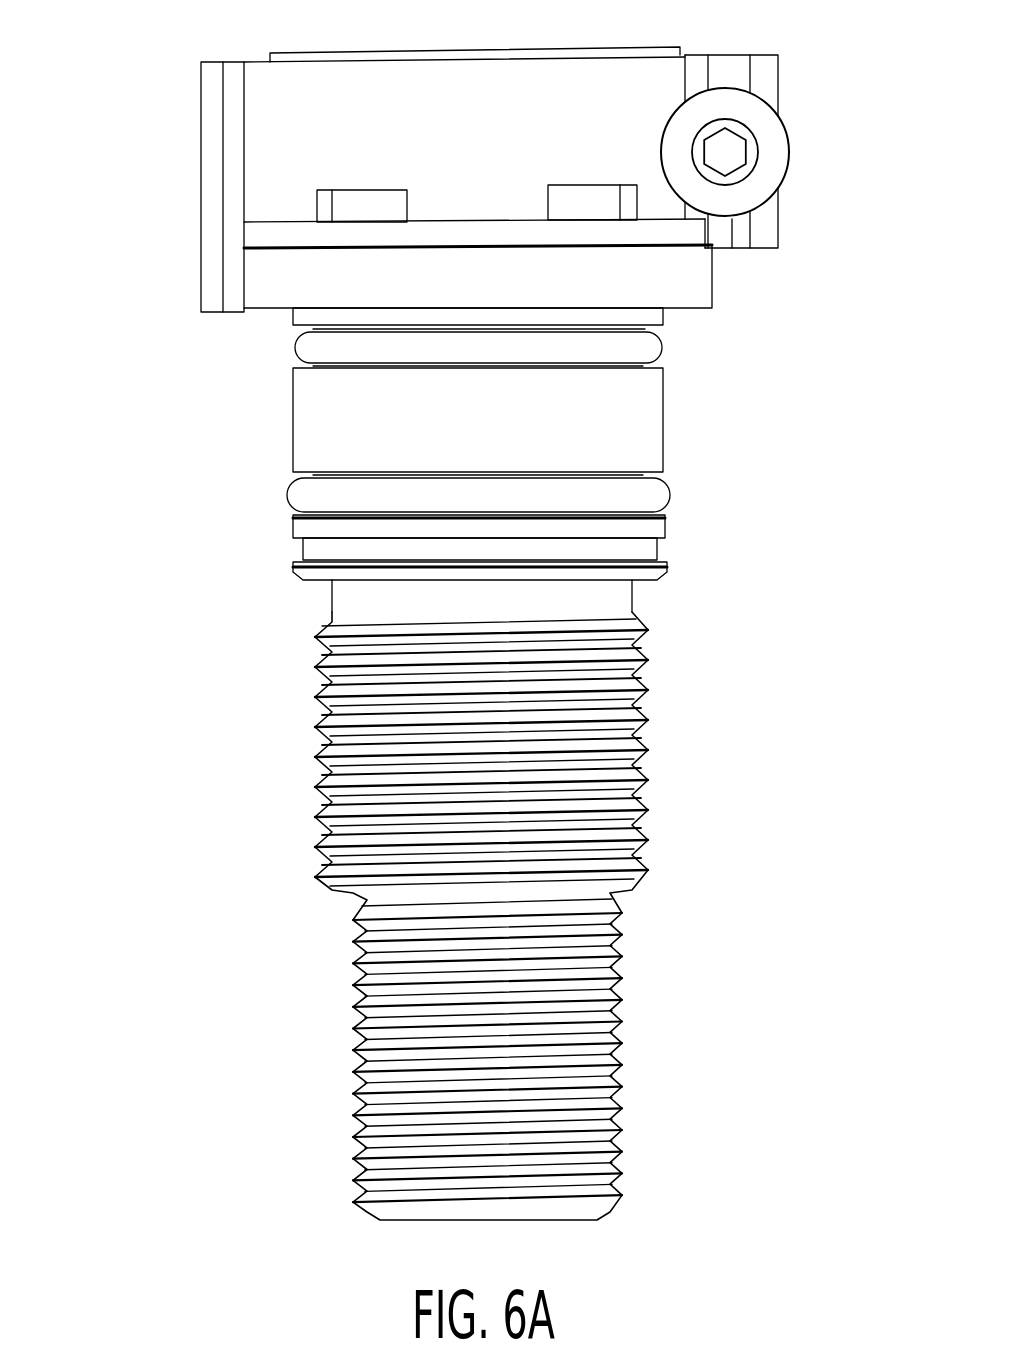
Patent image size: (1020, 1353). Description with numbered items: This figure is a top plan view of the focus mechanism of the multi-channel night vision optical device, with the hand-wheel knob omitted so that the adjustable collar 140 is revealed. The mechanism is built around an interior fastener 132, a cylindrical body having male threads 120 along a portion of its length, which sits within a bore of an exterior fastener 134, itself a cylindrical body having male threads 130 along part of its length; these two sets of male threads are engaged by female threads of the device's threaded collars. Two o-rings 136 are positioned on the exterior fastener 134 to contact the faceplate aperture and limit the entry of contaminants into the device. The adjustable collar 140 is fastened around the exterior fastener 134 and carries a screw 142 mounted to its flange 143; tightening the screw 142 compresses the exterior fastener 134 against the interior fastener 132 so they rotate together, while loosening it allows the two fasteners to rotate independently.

The male threads 120 is at (539, 764).
The male threads 130 is at (650, 782).
The interior fastener 132 is at (625, 1001).
The exterior fastener 134 is at (652, 691).
The o-rings 136 is at (645, 343).
The adjustable collar 140 is at (273, 113).
The screw 142 is at (775, 157).
The flange 143 is at (767, 82).